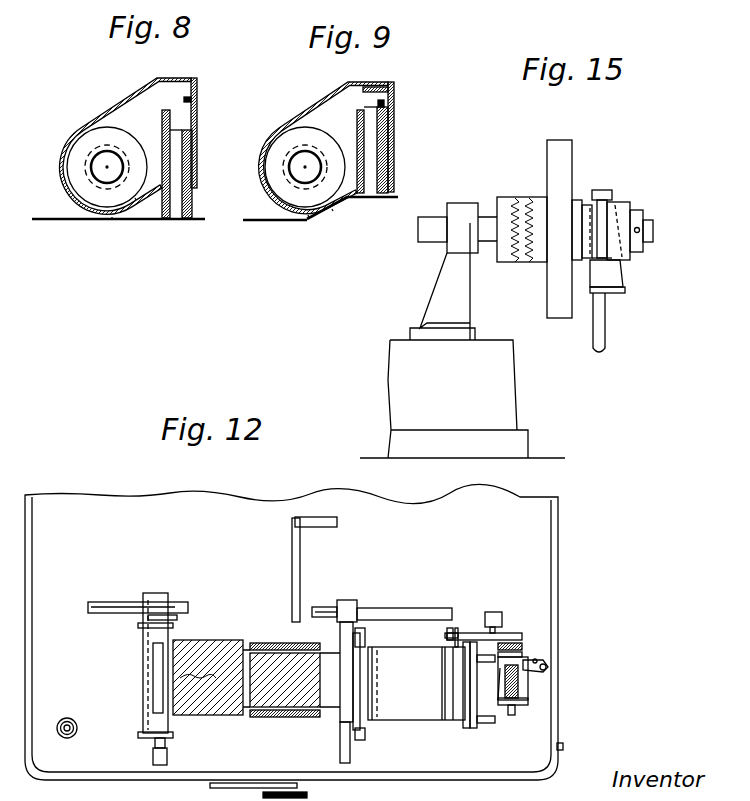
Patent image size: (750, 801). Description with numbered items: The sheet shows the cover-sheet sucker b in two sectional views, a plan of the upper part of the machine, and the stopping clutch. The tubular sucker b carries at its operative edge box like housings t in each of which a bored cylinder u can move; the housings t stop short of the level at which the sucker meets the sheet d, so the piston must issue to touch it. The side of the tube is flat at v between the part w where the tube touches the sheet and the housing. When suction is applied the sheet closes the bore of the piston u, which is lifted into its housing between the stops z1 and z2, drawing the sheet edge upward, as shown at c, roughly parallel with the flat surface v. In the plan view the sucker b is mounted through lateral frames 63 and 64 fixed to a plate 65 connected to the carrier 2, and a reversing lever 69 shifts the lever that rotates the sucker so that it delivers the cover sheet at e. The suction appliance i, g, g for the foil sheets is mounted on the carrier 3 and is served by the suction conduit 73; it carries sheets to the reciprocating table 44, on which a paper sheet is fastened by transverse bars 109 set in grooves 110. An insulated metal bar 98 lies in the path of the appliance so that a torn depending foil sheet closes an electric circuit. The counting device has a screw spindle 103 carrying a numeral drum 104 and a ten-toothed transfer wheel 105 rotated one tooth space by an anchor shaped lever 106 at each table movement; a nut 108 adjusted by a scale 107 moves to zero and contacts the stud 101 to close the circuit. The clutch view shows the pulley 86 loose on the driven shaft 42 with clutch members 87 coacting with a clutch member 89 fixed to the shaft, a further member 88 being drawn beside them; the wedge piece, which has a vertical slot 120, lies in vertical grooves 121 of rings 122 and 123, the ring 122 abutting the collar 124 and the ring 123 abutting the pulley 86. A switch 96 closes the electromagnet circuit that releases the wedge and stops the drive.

In FIG. 8, the sucker b is at (85, 122).
In FIG. 9, the sucker b is at (280, 132).
In FIG. 8, the stop z1 is at (163, 112).
In FIG. 9, the stop z1 is at (350, 96).
In FIG. 8, the stop z2 is at (196, 100).
In FIG. 9, the stop z2 is at (392, 103).
In FIG. 8, the box like housing t is at (197, 125).
In FIG. 9, the box like housing t is at (394, 135).
In FIG. 8, the cylinder u is at (193, 207).
In FIG. 9, the cylinder u is at (394, 170).
In FIG. 8, the sheet d is at (54, 222).
In FIG. 9, the sheet d is at (251, 223).
In FIG. 8, the part where the suction tube touches the sheet w is at (112, 220).
In FIG. 9, the part where the suction tube touches the sheet w is at (308, 222).
In FIG. 8, the flat part v is at (135, 198).
In FIG. 9, the flat part v is at (332, 211).
In FIG. 9, the lifted sheet c is at (348, 207).
In FIG. 12, the lifted sheet c is at (330, 680).
In FIG. 15, the driven shaft 42 is at (433, 232).
In FIG. 15, the clutch member 89 is at (505, 252).
In FIG. 15, the collar 88 is at (517, 197).
In FIG. 15, the clutch members 87 is at (530, 197).
In FIG. 15, the pulley 86 is at (563, 152).
In FIG. 15, the ring 123 is at (590, 210).
In FIG. 15, the ring 122 is at (622, 213).
In FIG. 15, the collar 124 is at (637, 243).
In FIG. 15, the vertical slot 120 is at (601, 291).
In FIG. 15, the vertical grooves 121 is at (612, 257).
In FIG. 12, the switch 96 is at (64, 713).
In FIG. 12, the carrier 2 is at (107, 605).
In FIG. 12, the plate 65 is at (148, 680).
In FIG. 12, the lateral frame 64 is at (153, 633).
In FIG. 12, the lateral frame 63 is at (152, 727).
In FIG. 12, the receptacle e is at (208, 664).
In FIG. 12, the plate l is at (203, 682).
In FIG. 12, the suction tube g is at (262, 648).
In FIG. 12, the reversing lever 69 is at (297, 570).
In FIG. 12, the carrier 3 is at (325, 610).
In FIG. 12, the tube i is at (347, 667).
In FIG. 12, the insulated metal bar 98 is at (357, 680).
In FIG. 12, the suction conduit 73 is at (350, 757).
In FIG. 12, the table 44 is at (430, 723).
In FIG. 12, the grooves 110 is at (462, 670).
In FIG. 12, the transverse bars 109 is at (470, 710).
In FIG. 12, the transfer wheel 105 is at (517, 637).
In FIG. 12, the anchor shaped lever 106 is at (498, 635).
In FIG. 12, the numeral drum 104 is at (525, 647).
In FIG. 12, the scale 107 is at (532, 702).
In FIG. 12, the screw spindle 103 is at (513, 708).
In FIG. 12, the stud 101 is at (550, 662).
In FIG. 12, the nut 108 is at (500, 668).